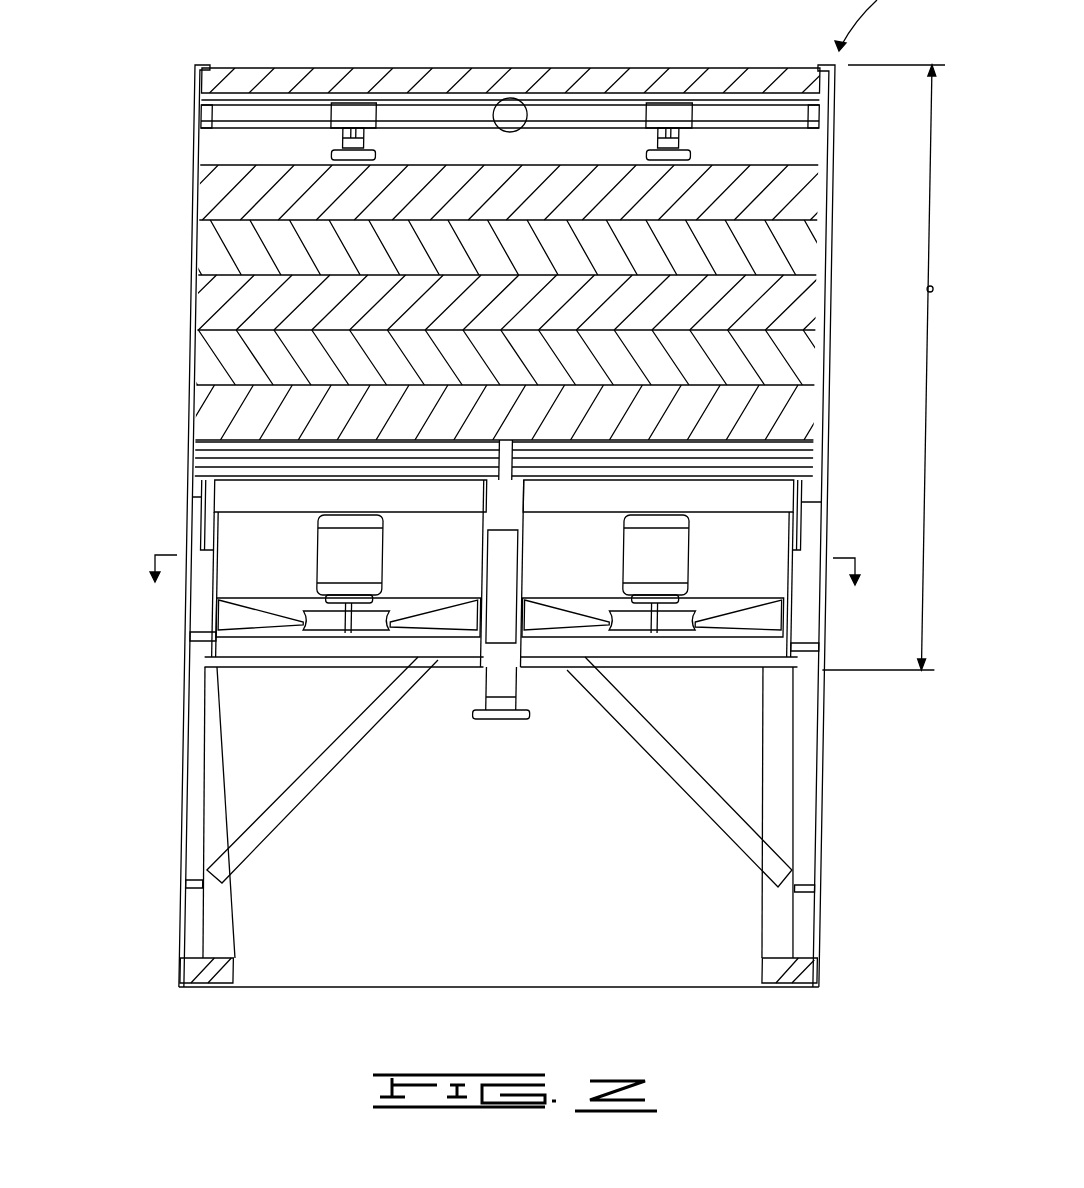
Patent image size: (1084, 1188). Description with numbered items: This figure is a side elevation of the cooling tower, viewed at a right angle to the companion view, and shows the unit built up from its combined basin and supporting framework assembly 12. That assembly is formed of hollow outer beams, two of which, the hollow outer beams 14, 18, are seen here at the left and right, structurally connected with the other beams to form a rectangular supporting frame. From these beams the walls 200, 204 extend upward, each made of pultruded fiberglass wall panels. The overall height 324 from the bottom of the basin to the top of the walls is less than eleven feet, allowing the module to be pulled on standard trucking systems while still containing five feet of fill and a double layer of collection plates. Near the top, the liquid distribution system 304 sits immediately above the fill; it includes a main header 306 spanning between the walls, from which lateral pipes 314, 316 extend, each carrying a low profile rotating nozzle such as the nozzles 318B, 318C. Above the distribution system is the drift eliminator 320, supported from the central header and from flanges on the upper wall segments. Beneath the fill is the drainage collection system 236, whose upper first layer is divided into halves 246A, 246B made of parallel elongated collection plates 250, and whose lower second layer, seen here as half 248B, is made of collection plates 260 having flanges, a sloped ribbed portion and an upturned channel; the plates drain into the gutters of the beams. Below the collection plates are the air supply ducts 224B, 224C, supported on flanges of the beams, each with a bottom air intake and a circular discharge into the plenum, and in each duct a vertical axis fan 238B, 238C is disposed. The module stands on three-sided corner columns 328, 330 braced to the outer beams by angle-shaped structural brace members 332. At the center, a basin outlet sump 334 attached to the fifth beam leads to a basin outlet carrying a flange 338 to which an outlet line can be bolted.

The wall 200 is at (194, 360).
The wall 204 is at (832, 234).
The lateral pipe 314 is at (290, 105).
The lateral pipe 316 is at (711, 118).
The rotating nozzle 318B is at (383, 128).
The rotating nozzle 318C is at (721, 118).
The drift eliminator 320 is at (447, 82).
The liquid distribution system 304 is at (565, 80).
The main header 306 is at (522, 98).
The overall height 324 is at (926, 289).
The drainage collection system 236 is at (492, 491).
The half of upper first layer 246A is at (205, 457).
The half of upper first layer 246B is at (797, 458).
The collection plate 250 is at (497, 455).
The half of lower second layer 248B is at (232, 493).
The collection plate 260 is at (492, 517).
The vertical axis fan 238B is at (237, 613).
The vertical axis fan 238C is at (778, 622).
The air supply duct 224B is at (250, 650).
The air supply duct 224C is at (735, 648).
The combined basin and supporting framework assembly 12 is at (523, 603).
The hollow outer beam 18 is at (825, 620).
The hollow outer beam 14 is at (185, 632).
The corner column 328 is at (188, 798).
The corner column 330 is at (810, 790).
The structural brace member 332 is at (335, 757).
The basin outlet sump 334 is at (482, 684).
The flange 338 is at (510, 717).